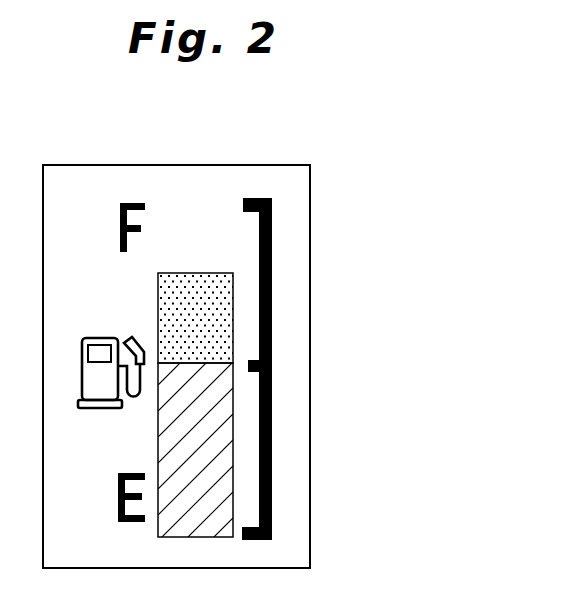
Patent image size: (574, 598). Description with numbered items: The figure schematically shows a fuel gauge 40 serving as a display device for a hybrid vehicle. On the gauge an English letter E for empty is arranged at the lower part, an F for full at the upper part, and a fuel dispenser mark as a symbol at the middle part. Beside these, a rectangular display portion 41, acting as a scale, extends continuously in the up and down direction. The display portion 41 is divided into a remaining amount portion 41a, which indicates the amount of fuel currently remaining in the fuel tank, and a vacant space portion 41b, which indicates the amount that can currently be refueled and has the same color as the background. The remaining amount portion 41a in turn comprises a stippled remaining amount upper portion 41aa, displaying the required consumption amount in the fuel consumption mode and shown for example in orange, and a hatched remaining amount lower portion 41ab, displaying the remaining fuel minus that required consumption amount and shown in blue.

The fuel gauge 40 is at (271, 326).
The display portion 41 is at (321, 369).
The remaining amount portion 41a is at (339, 406).
The remaining amount upper portion 41aa is at (241, 278).
The remaining amount lower portion 41ab is at (311, 451).
The vacant space portion 41b is at (241, 213).